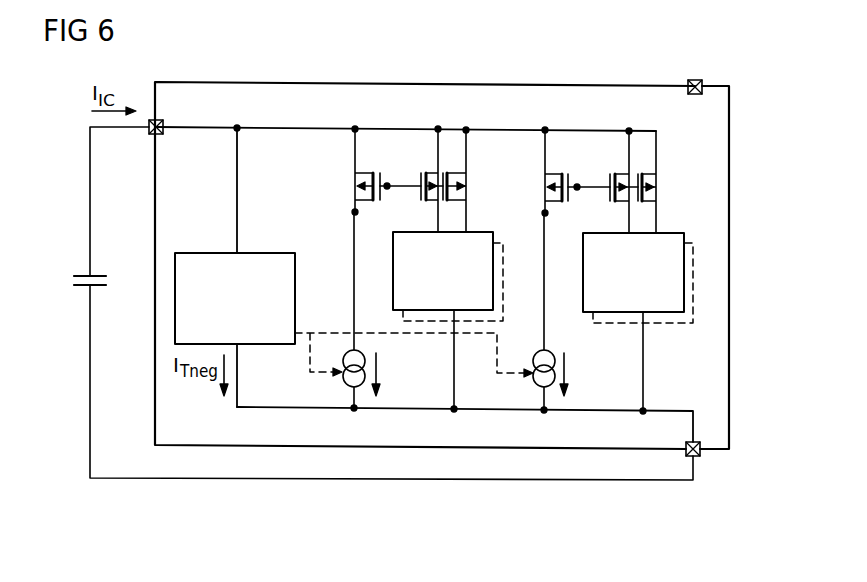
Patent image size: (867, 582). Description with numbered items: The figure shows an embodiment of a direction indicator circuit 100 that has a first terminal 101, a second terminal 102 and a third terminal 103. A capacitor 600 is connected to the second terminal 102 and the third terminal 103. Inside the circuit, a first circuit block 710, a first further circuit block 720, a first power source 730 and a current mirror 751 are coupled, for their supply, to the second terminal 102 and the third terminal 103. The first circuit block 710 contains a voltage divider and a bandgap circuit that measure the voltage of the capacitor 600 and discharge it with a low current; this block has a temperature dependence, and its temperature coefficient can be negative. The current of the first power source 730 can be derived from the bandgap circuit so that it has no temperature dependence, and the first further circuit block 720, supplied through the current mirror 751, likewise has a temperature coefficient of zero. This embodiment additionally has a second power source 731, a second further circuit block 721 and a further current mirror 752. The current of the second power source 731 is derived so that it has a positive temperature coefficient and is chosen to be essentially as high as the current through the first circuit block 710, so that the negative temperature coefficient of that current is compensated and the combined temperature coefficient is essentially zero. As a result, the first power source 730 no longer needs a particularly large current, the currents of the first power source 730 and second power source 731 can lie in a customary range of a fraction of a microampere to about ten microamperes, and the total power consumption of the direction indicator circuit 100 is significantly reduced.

The direction indicator circuit 100 is at (463, 82).
The first terminal 101 is at (694, 79).
The second terminal 102 is at (700, 457).
The third terminal 103 is at (153, 135).
The capacitor 600 is at (100, 289).
The first circuit block 710 is at (210, 253).
The first further circuit block 720 is at (480, 231).
The second further circuit block 721 is at (662, 318).
The first power source 730 is at (358, 390).
The second power source 731 is at (548, 390).
The current mirror 751 is at (415, 173).
The further current mirror 752 is at (607, 174).